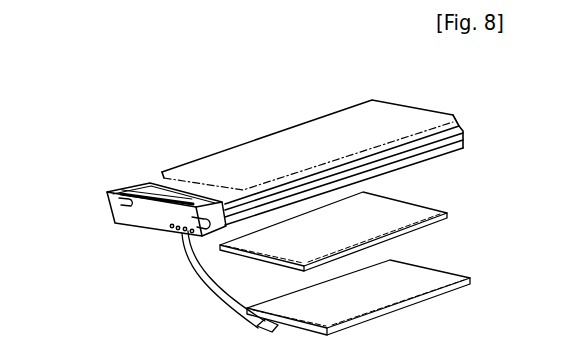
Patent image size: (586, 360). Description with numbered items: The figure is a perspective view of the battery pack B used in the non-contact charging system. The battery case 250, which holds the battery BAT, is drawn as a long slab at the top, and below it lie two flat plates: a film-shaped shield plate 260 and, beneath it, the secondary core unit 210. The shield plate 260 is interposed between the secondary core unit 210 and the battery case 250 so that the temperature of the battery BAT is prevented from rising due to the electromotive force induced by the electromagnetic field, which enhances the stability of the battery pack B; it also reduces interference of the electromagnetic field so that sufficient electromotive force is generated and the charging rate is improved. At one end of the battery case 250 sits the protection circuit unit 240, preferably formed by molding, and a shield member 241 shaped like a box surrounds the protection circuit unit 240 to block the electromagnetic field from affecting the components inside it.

The battery case 250 is at (393, 112).
The battery BAT is at (358, 100).
The battery pack B is at (210, 124).
The protection circuit unit 240 is at (137, 228).
The shield member 241 is at (107, 201).
The shield plate 260 is at (413, 203).
The secondary core unit 210 is at (430, 272).